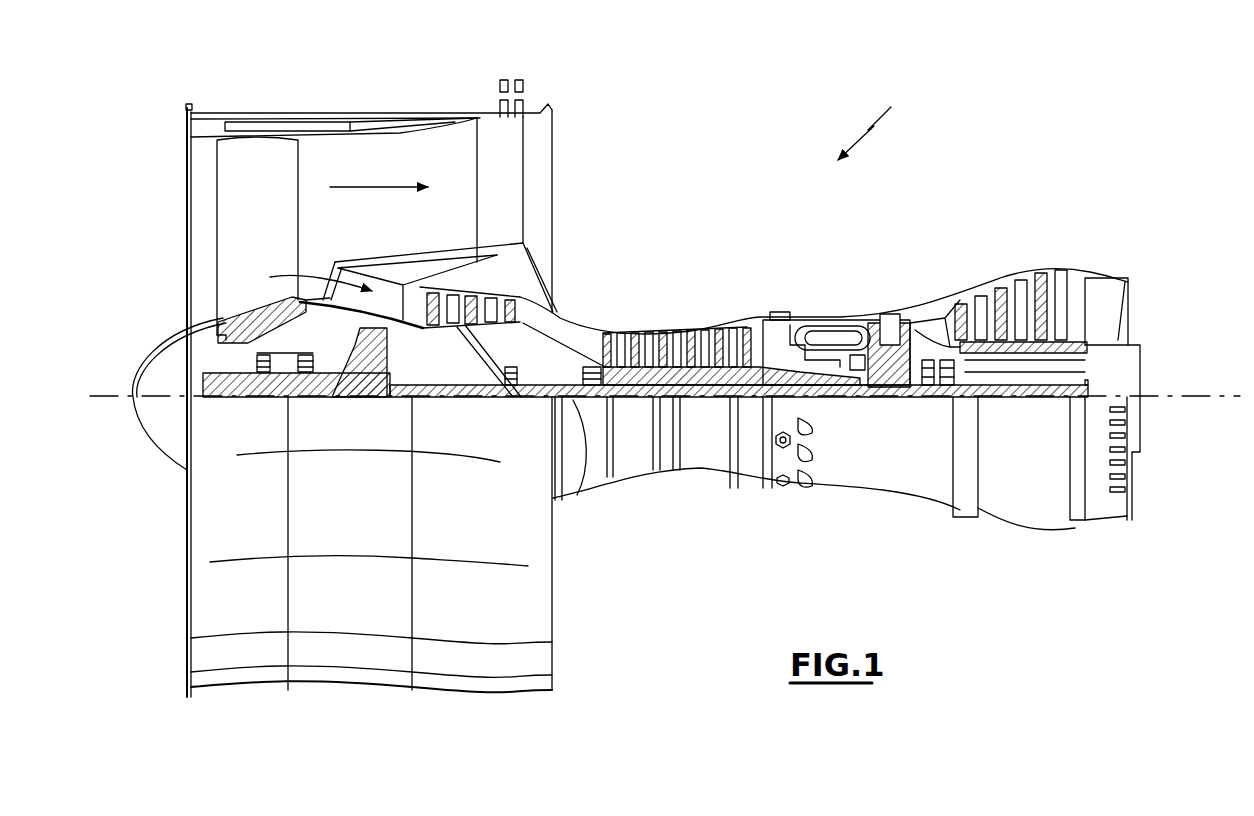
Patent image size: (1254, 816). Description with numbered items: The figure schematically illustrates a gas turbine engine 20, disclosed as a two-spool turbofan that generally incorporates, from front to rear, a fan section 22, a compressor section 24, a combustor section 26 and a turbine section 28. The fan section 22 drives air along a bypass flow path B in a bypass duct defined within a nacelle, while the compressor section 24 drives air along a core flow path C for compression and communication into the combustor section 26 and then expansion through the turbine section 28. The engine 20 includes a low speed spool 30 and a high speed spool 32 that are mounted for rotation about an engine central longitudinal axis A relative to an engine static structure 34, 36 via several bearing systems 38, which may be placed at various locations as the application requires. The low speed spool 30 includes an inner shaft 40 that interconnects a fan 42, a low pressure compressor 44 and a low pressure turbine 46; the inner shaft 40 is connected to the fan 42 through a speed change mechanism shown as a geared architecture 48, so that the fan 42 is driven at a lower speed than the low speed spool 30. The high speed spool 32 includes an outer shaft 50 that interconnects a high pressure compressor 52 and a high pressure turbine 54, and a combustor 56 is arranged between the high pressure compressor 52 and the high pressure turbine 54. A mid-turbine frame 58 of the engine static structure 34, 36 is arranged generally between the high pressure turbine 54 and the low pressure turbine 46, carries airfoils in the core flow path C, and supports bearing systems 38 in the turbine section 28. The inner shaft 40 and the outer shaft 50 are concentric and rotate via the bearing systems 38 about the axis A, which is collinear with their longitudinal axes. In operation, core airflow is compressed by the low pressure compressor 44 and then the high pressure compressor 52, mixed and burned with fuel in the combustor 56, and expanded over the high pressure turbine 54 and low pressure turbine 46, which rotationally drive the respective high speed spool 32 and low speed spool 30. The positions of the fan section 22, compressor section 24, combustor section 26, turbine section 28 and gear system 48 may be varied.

The gas turbine engine 20 is at (880, 123).
The fan section 22 is at (397, 91).
The compressor section 24 is at (410, 236).
The combustor section 26 is at (860, 236).
The turbine section 28 is at (1082, 236).
The low speed spool 30 is at (708, 402).
The high speed spool 32 is at (752, 343).
The engine static structure 34 is at (1045, 360).
The engine static structure 36 is at (750, 482).
The bearing systems 38 is at (267, 397).
The inner shaft 40 is at (580, 470).
The fan 42 is at (274, 244).
The low pressure compressor 44 is at (483, 300).
The low pressure turbine 46 is at (1015, 290).
The geared architecture 48 is at (377, 380).
The outer shaft 50 is at (837, 377).
The high pressure compressor 52 is at (678, 358).
The high pressure turbine 54 is at (890, 313).
The combustor 56 is at (825, 337).
The mid-turbine frame 58 is at (933, 302).
The engine central longitudinal axis A is at (1216, 396).
The bypass flow path B is at (360, 187).
The core flow path C is at (311, 280).